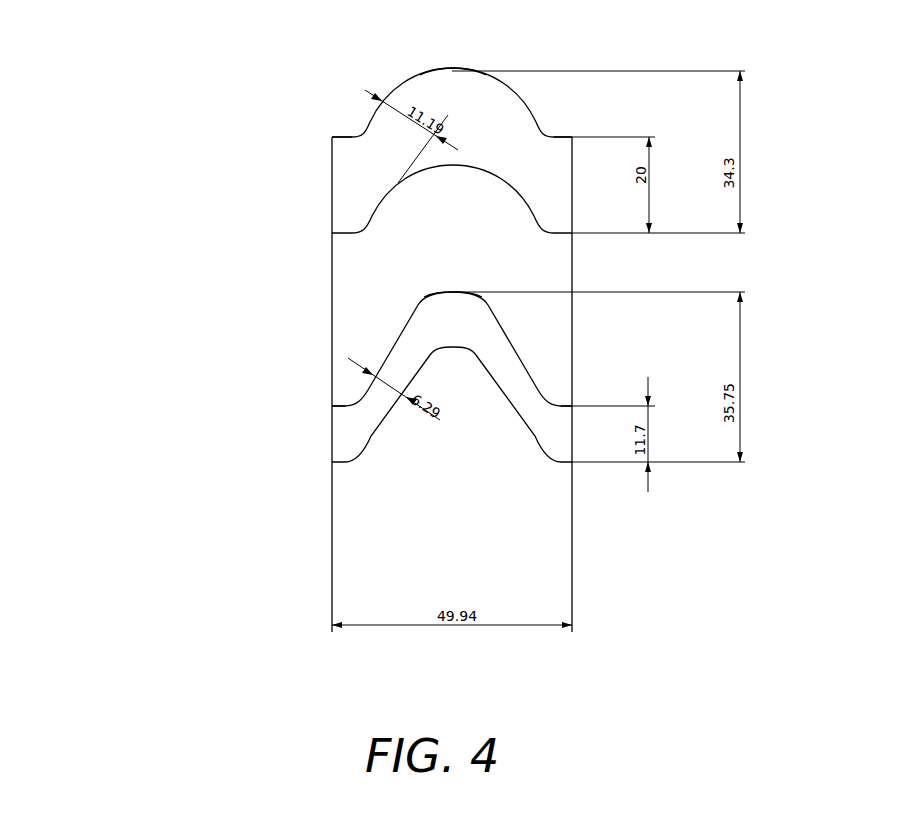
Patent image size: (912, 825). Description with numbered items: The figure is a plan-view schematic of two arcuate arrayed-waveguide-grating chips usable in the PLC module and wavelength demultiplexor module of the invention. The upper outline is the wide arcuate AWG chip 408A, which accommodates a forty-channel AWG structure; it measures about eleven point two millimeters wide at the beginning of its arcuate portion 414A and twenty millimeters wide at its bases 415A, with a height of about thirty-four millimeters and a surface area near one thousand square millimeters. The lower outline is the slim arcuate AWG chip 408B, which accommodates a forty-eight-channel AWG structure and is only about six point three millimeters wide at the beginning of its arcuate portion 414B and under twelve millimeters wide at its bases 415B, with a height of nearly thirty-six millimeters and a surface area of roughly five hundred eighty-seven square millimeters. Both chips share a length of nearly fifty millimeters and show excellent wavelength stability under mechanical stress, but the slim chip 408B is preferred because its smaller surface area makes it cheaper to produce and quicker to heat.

The wide arcuate AWG chip 408A is at (358, 168).
The arcuate portion 414A is at (452, 60).
The bases 415A is at (324, 158).
The slim arcuate AWG chip 408B is at (360, 410).
The arcuate portion 414B is at (452, 284).
The bases 415B is at (324, 447).